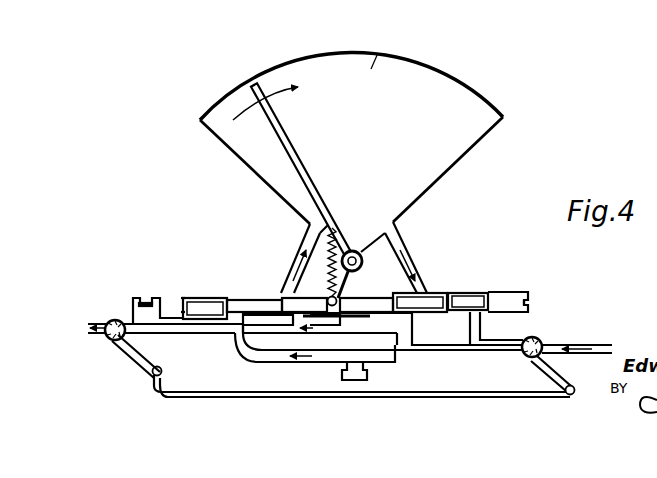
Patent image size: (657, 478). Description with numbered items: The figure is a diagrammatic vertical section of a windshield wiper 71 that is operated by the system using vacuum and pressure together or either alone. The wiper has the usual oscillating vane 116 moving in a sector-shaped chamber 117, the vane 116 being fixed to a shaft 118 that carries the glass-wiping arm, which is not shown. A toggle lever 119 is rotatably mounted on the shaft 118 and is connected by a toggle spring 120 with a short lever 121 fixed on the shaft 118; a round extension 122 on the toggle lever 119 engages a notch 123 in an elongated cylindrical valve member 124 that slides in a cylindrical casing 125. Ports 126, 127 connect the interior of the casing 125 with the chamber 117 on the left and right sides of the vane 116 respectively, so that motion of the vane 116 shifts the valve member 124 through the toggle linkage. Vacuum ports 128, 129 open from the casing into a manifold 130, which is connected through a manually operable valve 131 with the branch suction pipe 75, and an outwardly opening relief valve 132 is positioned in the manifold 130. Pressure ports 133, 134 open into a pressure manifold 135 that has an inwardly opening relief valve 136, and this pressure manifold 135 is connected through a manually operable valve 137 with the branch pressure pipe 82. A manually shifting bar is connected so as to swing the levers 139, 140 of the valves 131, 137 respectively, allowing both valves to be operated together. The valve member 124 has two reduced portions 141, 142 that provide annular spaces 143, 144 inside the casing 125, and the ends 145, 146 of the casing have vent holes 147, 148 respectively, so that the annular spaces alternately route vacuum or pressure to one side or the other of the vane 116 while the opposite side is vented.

The windshield wiper 71 is at (413, 64).
The branch suction pipe 75 is at (101, 323).
The branch pressure pipe 82 is at (572, 344).
The oscillating vane 116 is at (258, 84).
The sector-shaped chamber 117 is at (380, 53).
The shaft 118 is at (361, 258).
The toggle lever 119 is at (344, 280).
The toggle spring 120 is at (331, 262).
The short lever 121 is at (342, 240).
The round extension 122 is at (328, 298).
The notch 123 is at (336, 320).
The cylindrical valve member 124 is at (482, 298).
The cylindrical casing 125 is at (471, 292).
The port 126 is at (283, 281).
The port 127 is at (427, 281).
The vacuum port 128 is at (302, 325).
The vacuum port 129 is at (403, 320).
The manifold 130 is at (357, 325).
The manually operable valve 131 is at (110, 339).
The relief valve 132 is at (145, 302).
The pressure port 133 is at (234, 325).
The pressure port 134 is at (483, 315).
The pressure manifold 135 is at (434, 352).
The relief valve 136 is at (344, 370).
The manually operable valve 137 is at (539, 339).
The lever 139 is at (162, 353).
The lever 140 is at (555, 371).
The reduced portion 141 is at (256, 306).
The reduced portion 142 is at (436, 300).
The annular space 143 is at (240, 300).
The annular space 144 is at (428, 313).
The casing end 145 is at (185, 309).
The casing end 146 is at (529, 296).
The vent hole 147 is at (185, 299).
The vent hole 148 is at (529, 303).